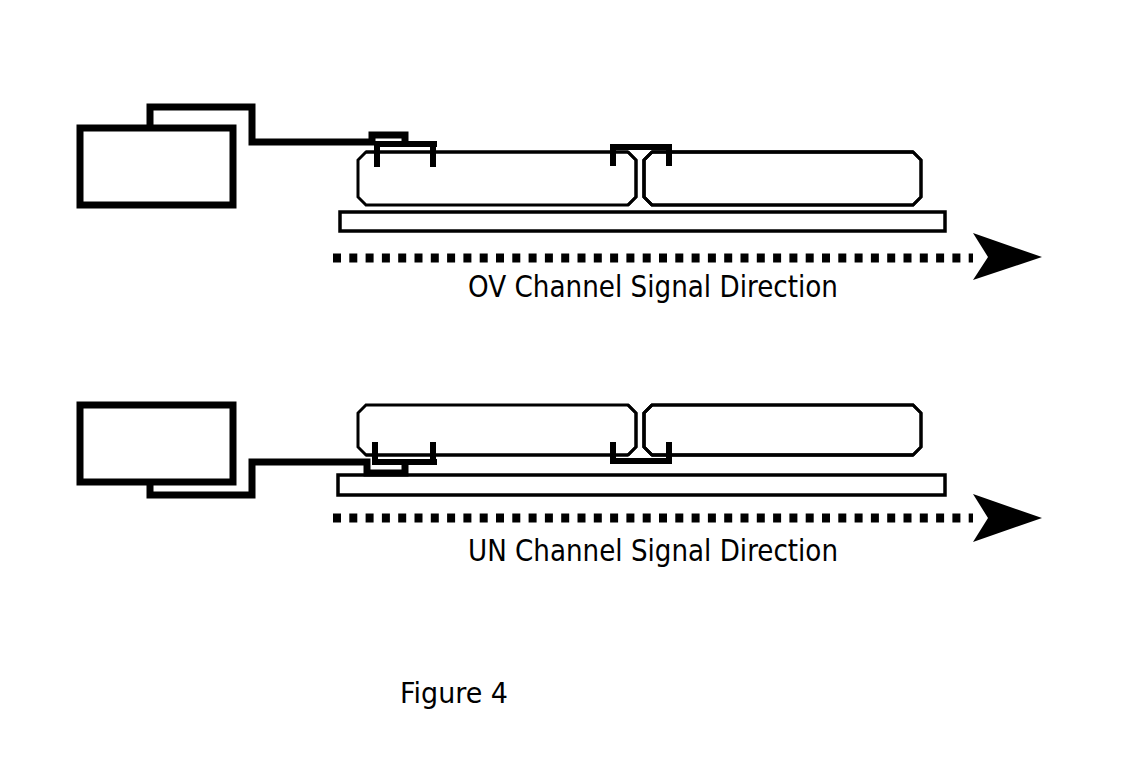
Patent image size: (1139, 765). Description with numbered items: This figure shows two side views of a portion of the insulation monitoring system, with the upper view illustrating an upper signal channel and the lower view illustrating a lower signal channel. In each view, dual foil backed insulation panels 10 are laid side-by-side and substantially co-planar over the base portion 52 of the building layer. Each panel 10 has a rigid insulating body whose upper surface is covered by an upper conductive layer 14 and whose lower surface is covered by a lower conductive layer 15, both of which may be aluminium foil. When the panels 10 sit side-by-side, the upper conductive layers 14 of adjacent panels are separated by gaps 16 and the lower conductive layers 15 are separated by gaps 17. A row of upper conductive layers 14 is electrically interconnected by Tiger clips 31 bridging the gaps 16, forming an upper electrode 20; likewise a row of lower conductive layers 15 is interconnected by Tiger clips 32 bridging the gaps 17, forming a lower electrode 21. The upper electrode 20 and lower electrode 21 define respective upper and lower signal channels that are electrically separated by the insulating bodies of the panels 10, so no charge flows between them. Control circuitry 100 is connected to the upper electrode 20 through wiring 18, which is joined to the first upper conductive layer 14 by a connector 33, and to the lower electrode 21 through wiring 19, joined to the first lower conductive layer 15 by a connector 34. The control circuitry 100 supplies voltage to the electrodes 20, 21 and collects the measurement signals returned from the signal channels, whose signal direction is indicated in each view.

The dual foil backed insulation panel 10 is at (497, 172).
The upper conductive layer 14 is at (567, 152).
The lower conductive layer 15 is at (572, 452).
The gap 16 is at (643, 400).
The gap 17 is at (645, 200).
The wiring 18 is at (268, 142).
The wiring 19 is at (265, 461).
The upper electrode 20 is at (921, 154).
The lower electrode 21 is at (922, 453).
The Tiger clip 31 is at (645, 144).
The Tiger clip 32 is at (657, 460).
The connector 33 is at (427, 142).
The connector 34 is at (403, 460).
The base portion 52 is at (950, 220).
The control circuitry 100 is at (156, 305).